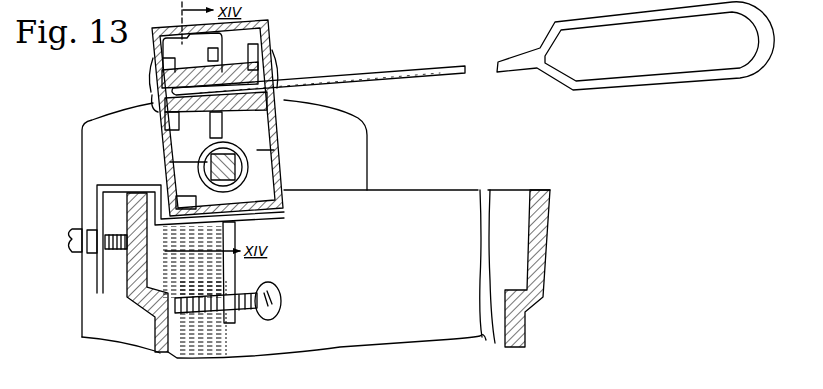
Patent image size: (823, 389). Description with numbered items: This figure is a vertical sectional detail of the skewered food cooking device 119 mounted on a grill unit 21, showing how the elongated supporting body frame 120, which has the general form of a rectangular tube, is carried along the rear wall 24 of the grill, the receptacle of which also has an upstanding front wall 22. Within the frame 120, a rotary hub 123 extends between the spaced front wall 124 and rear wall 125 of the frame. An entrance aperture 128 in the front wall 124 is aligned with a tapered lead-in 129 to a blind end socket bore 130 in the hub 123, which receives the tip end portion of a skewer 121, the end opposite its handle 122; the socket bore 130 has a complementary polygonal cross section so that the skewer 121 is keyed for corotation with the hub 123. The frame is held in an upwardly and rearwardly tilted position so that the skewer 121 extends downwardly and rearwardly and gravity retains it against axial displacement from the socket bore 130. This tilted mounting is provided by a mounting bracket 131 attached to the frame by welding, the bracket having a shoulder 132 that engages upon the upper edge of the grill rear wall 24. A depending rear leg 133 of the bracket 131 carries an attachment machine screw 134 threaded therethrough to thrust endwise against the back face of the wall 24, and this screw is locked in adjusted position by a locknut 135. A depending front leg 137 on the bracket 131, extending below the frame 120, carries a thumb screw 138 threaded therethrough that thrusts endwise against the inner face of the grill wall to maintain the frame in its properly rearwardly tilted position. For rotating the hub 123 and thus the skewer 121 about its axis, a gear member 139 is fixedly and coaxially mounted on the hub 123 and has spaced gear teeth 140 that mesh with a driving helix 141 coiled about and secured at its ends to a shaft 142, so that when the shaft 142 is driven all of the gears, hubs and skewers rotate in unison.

The grill unit 21 is at (494, 190).
The front wall 22 is at (545, 272).
The rear wall 24 is at (136, 293).
The skewered food cooking device 119 is at (148, 70).
The supporting body frame 120 is at (284, 204).
The skewer 121 is at (500, 62).
The handle 122 is at (655, 84).
The rotary hub 123 is at (255, 56).
The front wall 124 is at (280, 143).
The rear wall 125 is at (160, 144).
The entrance aperture 128 is at (277, 76).
The tapered lead-in 129 is at (270, 56).
The socket bore 130 is at (195, 89).
The mounting bracket 131 is at (135, 196).
The shoulder 132 is at (118, 190).
The rear leg 133 is at (102, 277).
The attachment machine screw 134 is at (80, 231).
The locknut 135 is at (90, 256).
The front leg 137 is at (236, 281).
The thumb screw 138 is at (262, 318).
The gear member 139 is at (219, 60).
The gear teeth 140 is at (178, 34).
The driving helix 141 is at (250, 182).
The shaft 142 is at (213, 172).